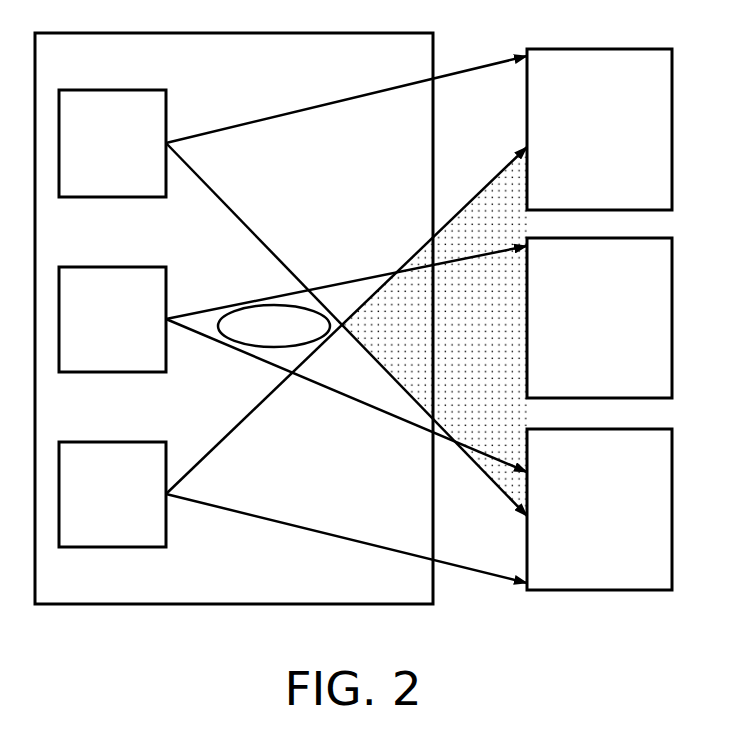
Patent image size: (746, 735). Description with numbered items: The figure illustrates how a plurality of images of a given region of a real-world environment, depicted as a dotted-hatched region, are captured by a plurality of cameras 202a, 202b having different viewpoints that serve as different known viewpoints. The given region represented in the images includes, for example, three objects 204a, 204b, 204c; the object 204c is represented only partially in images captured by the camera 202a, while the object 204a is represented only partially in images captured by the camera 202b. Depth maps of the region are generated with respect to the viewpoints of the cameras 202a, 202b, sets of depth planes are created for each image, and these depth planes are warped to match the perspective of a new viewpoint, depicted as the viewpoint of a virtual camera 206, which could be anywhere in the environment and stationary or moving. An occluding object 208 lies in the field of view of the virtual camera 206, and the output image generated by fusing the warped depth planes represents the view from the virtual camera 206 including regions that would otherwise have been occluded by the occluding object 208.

The camera 202a is at (83, 158).
The camera 202b is at (83, 508).
The virtual camera 206 is at (90, 334).
The occluding object 208 is at (252, 340).
The object 204a is at (570, 145).
The object 204b is at (570, 333).
The object 204c is at (570, 525).